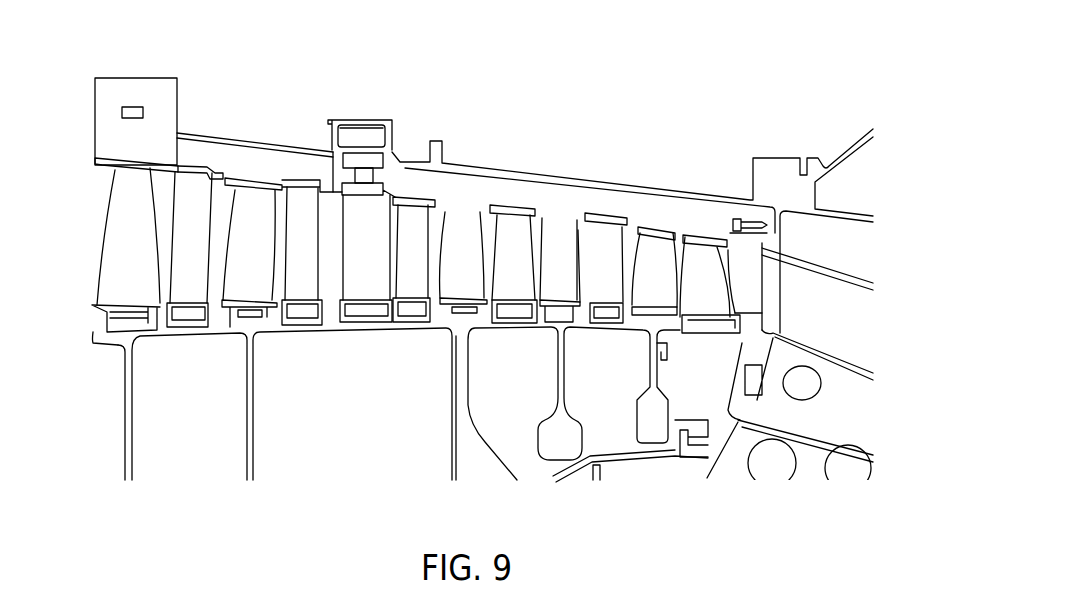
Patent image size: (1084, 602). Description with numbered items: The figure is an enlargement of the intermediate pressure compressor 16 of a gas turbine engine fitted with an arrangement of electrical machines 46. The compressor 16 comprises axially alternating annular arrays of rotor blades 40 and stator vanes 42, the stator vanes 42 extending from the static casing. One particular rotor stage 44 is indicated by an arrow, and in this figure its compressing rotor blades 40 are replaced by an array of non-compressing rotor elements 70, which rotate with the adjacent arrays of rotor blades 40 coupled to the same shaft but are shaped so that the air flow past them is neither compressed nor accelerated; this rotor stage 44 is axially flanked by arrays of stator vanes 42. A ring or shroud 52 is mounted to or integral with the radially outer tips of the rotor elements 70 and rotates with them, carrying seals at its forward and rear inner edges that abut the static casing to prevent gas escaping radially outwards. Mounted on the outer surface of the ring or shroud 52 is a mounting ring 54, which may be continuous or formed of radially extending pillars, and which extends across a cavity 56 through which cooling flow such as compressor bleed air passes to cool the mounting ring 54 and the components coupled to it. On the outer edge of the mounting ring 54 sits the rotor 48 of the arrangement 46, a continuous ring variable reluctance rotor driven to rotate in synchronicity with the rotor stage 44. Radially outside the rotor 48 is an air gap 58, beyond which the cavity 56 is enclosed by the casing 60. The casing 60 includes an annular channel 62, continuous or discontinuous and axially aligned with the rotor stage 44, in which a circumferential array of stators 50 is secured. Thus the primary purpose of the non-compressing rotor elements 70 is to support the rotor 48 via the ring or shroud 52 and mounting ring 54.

The intermediate pressure compressor 16 is at (93, 195).
The rotor blades 40 is at (269, 258).
The stator vanes 42 is at (208, 258).
The rotor stage 44 is at (362, 462).
The arrangement of electrical machines 46 is at (335, 84).
The rotor 48 is at (373, 158).
The stators 50 is at (347, 127).
The ring or shroud 52 is at (380, 190).
The mounting ring 54 is at (368, 178).
The cavity 56 is at (452, 198).
The air gap 58 is at (334, 150).
The casing 60 is at (565, 175).
The annular channel 62 is at (363, 125).
The non-compressing rotor elements 70 is at (382, 260).